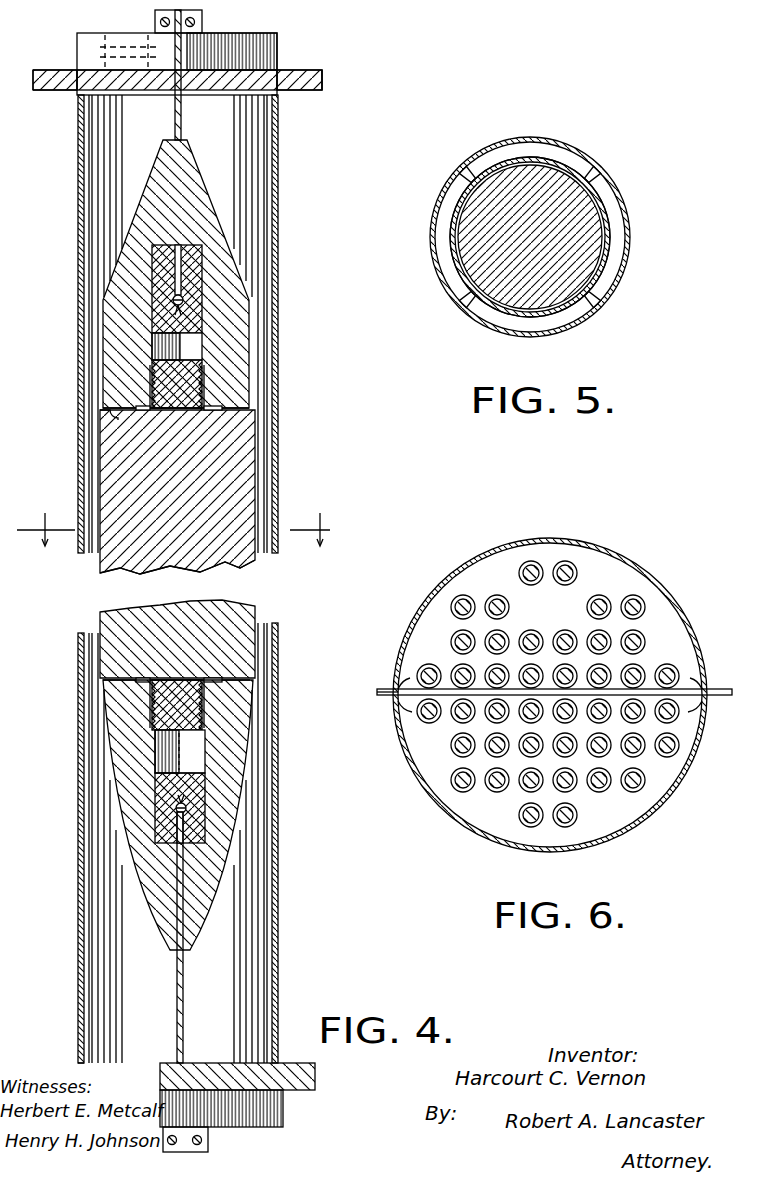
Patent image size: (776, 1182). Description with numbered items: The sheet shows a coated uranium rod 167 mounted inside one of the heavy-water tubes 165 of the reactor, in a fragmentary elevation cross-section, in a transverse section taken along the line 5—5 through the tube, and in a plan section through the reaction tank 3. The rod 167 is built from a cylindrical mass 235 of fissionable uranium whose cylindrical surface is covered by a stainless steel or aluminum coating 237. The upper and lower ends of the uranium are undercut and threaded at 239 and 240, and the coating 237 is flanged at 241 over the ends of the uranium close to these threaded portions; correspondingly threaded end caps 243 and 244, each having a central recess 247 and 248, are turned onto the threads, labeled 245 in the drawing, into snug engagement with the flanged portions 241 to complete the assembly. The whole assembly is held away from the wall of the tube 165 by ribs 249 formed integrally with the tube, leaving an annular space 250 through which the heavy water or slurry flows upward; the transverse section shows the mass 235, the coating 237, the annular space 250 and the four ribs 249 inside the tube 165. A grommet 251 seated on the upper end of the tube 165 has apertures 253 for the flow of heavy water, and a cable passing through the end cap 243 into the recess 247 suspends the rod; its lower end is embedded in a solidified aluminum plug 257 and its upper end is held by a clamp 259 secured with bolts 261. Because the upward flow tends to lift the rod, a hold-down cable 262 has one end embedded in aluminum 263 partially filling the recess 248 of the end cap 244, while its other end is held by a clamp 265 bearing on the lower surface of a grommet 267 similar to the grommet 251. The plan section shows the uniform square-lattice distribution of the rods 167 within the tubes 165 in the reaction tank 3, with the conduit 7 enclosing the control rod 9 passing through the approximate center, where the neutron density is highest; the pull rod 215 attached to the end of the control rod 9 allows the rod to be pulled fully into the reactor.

In FIG. 6, the reaction tank 3 is at (680, 605).
In FIG. 4, the section line 5— 5 is at (181, 531).
In FIG. 6, the conduit 7 is at (400, 702).
In FIG. 6, the control rod 9 is at (732, 696).
In FIG. 4, the tube 165 is at (279, 455).
In FIG. 5, the tube 165 is at (433, 225).
In FIG. 6, the tube 165 is at (633, 597).
In FIG. 4, the uranium rod 167 is at (245, 574).
In FIG. 6, the pull rod 215 is at (385, 697).
In FIG. 4, the mass of fissionable material 235 is at (236, 490).
In FIG. 5, the mass of fissionable material 235 is at (568, 215).
In FIG. 6, the mass of fissionable material 235 is at (490, 596).
In FIG. 4, the coating 237 is at (259, 440).
In FIG. 5, the coating 237 is at (608, 240).
In FIG. 6, the coating 237 is at (565, 561).
In FIG. 4, the threaded portion 239 is at (190, 380).
In FIG. 4, the threaded portion 240 is at (190, 705).
In FIG. 4, the flanged portion 241 is at (112, 418).
In FIG. 4, the end cap 243 is at (232, 278).
In FIG. 4, the end cap 244 is at (236, 815).
In FIG. 4, the threads 245 is at (150, 380).
In FIG. 4, the central recess 247 is at (190, 345).
In FIG. 4, the central recess 248 is at (172, 760).
In FIG. 4, the ribs 249 is at (112, 152).
In FIG. 5, the ribs 249 is at (466, 176).
In FIG. 6, the ribs 249 is at (458, 782).
In FIG. 4, the annular space 250 is at (267, 512).
In FIG. 5, the annular space 250 is at (612, 266).
In FIG. 4, the grommet 251 is at (266, 55).
In FIG. 4, the apertures 253 is at (125, 50).
In FIG. 4, the plug 257 is at (160, 280).
In FIG. 4, the clamp 259 is at (196, 22).
In FIG. 4, the bolts 261 is at (203, 15).
In FIG. 4, the hold-down cable 262 is at (184, 967).
In FIG. 4, the aluminum 263 is at (165, 825).
In FIG. 4, the clamp 265 is at (182, 118).
In FIG. 4, the grommet 267 is at (283, 1118).